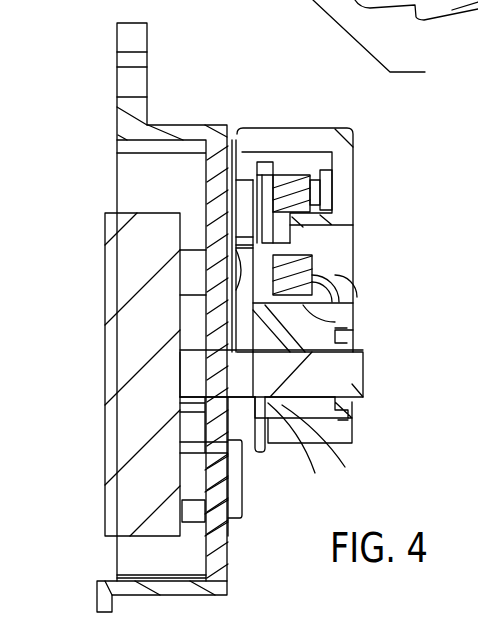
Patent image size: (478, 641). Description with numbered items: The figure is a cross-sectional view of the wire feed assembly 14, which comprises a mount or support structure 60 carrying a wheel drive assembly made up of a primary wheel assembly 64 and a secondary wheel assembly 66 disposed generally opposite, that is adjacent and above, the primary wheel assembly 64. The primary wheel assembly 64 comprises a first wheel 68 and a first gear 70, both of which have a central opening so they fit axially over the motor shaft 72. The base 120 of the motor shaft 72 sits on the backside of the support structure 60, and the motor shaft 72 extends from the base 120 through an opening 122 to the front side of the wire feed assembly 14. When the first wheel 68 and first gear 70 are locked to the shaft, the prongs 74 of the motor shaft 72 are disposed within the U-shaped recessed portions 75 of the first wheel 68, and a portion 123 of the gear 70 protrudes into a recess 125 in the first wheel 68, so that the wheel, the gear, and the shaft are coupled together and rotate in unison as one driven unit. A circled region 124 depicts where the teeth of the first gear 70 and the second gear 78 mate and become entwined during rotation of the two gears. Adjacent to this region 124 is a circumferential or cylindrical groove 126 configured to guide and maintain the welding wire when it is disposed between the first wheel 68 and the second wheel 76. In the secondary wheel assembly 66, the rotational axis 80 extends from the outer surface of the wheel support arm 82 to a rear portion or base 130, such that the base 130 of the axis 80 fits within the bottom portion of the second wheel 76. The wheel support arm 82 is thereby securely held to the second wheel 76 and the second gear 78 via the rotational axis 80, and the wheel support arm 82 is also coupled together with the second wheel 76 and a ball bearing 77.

The wire feed assembly 14 is at (62, 69).
The support structure 60 is at (230, 583).
The primary wheel assembly 64 is at (352, 459).
The secondary wheel assembly 66 is at (363, 161).
The first wheel 68 is at (277, 446).
The first gear 70 is at (262, 402).
The motor shaft 72 is at (354, 381).
The prongs 74 is at (348, 343).
The U-shaped recessed portions 75 is at (346, 332).
The second wheel 76 is at (292, 165).
The ball bearing 77 is at (300, 188).
The second gear 78 is at (262, 168).
The rotational axis 80 is at (338, 228).
The wheel support arm 82 is at (330, 142).
The base of the motor shaft 120 is at (123, 278).
The opening 122 is at (243, 396).
The portion of the gear 123 is at (290, 402).
The region 124 is at (275, 302).
The recess 125 is at (287, 402).
The circumferential groove 126 is at (362, 326).
The base of the rotational axis 130 is at (270, 228).